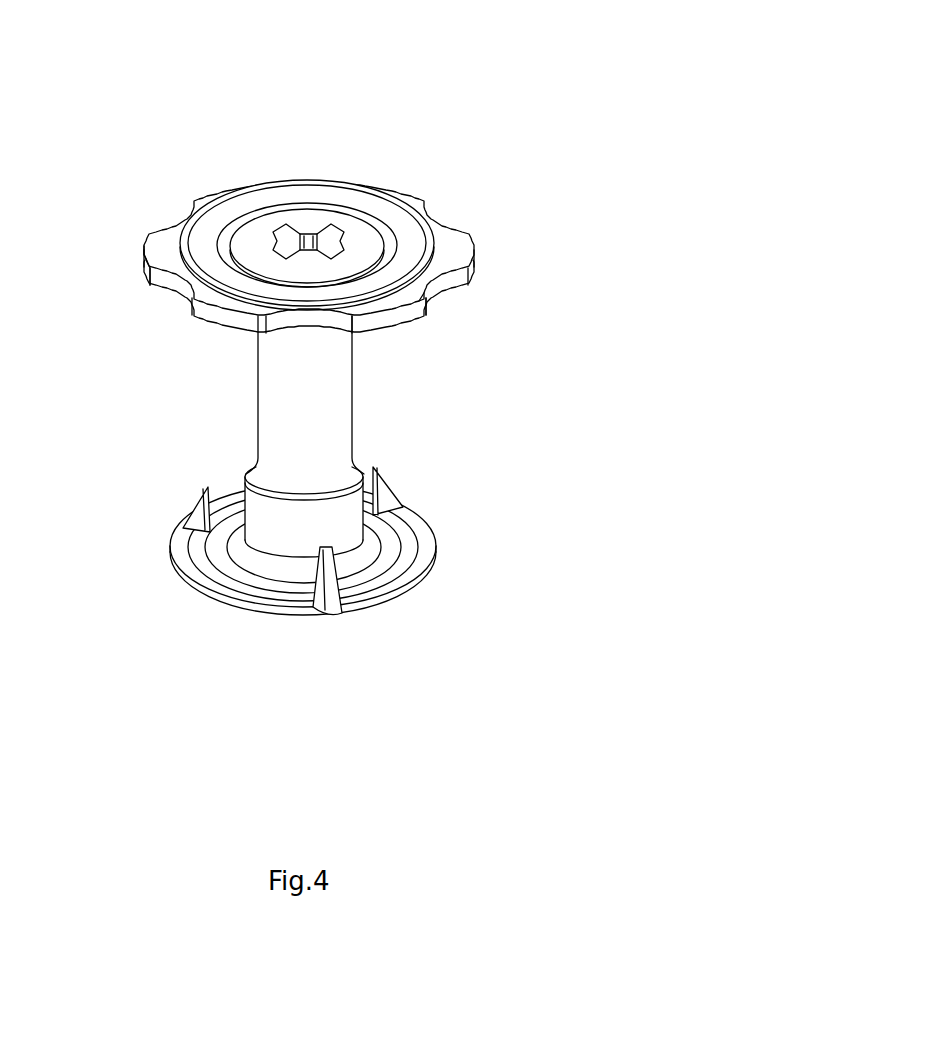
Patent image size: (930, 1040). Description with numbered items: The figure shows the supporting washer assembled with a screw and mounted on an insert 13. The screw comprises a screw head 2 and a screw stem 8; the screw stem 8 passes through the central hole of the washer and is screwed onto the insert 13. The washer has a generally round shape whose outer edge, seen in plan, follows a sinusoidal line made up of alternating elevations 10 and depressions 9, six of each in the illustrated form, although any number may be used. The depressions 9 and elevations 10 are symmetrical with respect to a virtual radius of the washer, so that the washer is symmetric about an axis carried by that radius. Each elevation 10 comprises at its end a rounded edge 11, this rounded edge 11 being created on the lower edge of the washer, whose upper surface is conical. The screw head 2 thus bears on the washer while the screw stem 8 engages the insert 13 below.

The screw head 2 is at (301, 219).
The screw stem 8 is at (323, 412).
The depressions 9 is at (417, 295).
The elevations 10 is at (315, 254).
The rounded edge 11 is at (197, 322).
The insert 13 is at (417, 548).